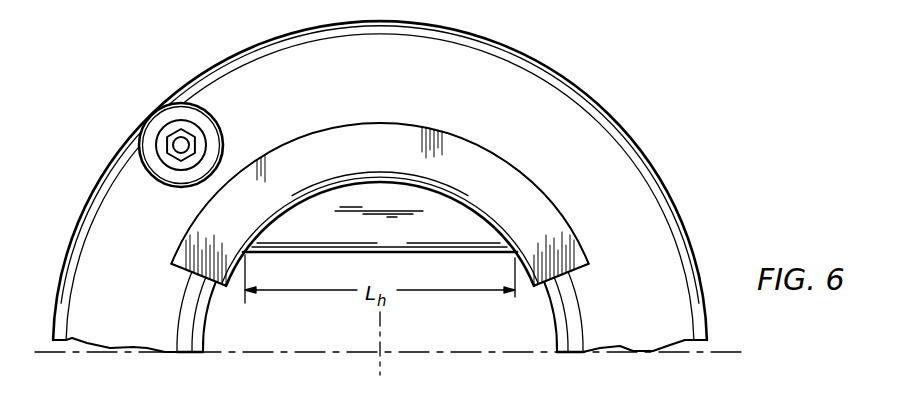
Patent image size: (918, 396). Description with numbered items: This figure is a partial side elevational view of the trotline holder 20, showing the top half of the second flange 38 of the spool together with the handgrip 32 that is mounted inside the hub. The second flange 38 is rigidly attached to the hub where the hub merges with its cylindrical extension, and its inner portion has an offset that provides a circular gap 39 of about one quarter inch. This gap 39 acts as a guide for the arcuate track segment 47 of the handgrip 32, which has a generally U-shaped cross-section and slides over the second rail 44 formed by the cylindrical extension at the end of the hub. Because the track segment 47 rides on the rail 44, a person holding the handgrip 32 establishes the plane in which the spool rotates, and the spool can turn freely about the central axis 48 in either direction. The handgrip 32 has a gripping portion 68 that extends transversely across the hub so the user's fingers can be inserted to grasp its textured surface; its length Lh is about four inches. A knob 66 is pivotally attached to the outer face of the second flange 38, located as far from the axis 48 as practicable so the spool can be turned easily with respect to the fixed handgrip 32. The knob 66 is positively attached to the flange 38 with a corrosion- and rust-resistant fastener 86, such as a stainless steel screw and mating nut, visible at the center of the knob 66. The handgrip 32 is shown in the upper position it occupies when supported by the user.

The holder 20 is at (610, 96).
The handgrip 32 is at (578, 206).
The second flange 38 is at (190, 66).
The circular gap 39 is at (569, 303).
The second cylindrical extension 44 is at (560, 337).
The arcuate track segment 47 is at (212, 288).
The central axis 48 is at (380, 352).
The knob 66 is at (147, 173).
The gripping portion 68 is at (320, 255).
The fastener 86 is at (172, 128).